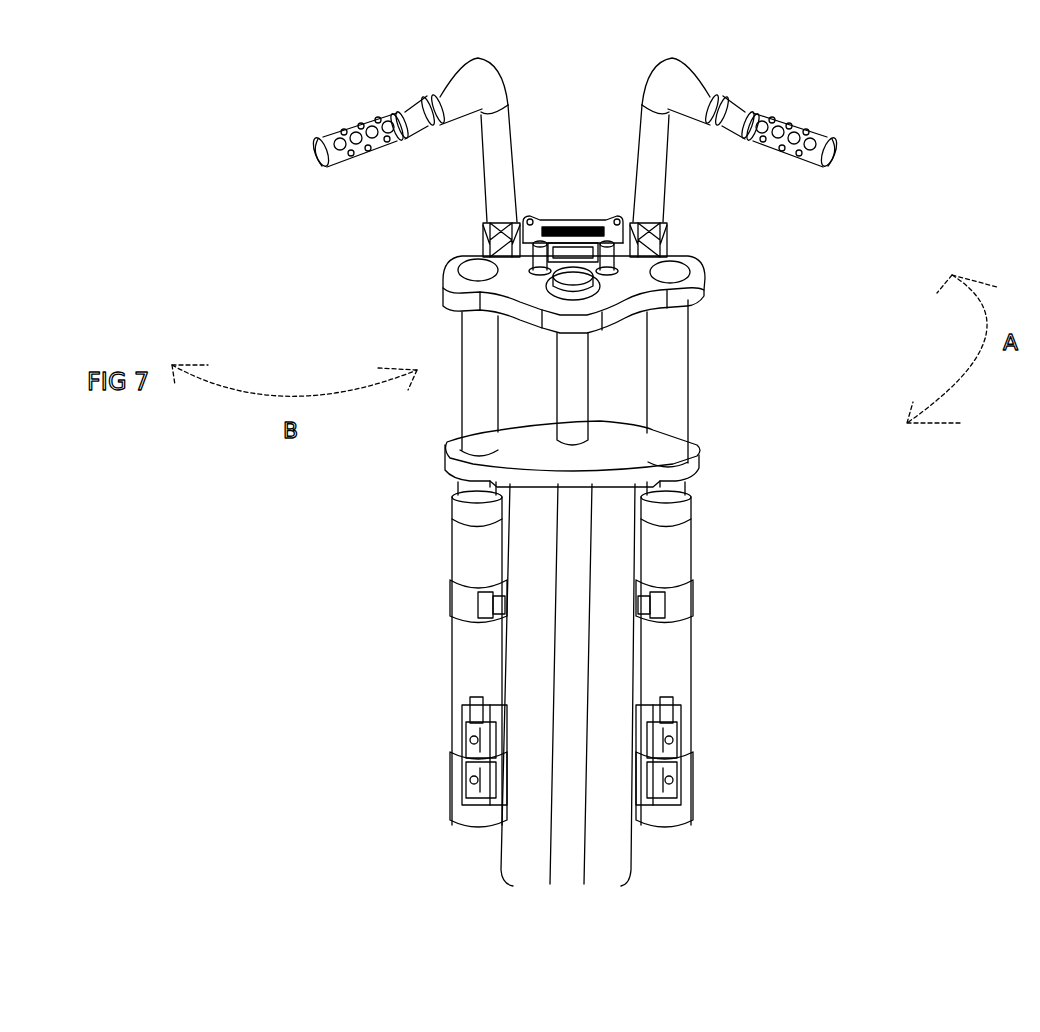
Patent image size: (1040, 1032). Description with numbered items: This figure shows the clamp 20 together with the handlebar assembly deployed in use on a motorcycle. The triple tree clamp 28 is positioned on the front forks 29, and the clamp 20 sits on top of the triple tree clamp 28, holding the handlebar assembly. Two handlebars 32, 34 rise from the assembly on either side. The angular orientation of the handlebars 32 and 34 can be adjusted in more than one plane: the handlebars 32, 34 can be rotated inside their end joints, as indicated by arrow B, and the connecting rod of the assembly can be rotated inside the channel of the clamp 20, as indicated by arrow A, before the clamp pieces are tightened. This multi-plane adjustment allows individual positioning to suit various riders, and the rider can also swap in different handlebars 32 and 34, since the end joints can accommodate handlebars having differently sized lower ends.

The clamp 20 is at (580, 225).
The triple tree clamp 28 is at (697, 292).
The front forks 29 is at (672, 437).
The handlebar 32 is at (647, 175).
The handlebar 34 is at (497, 167).